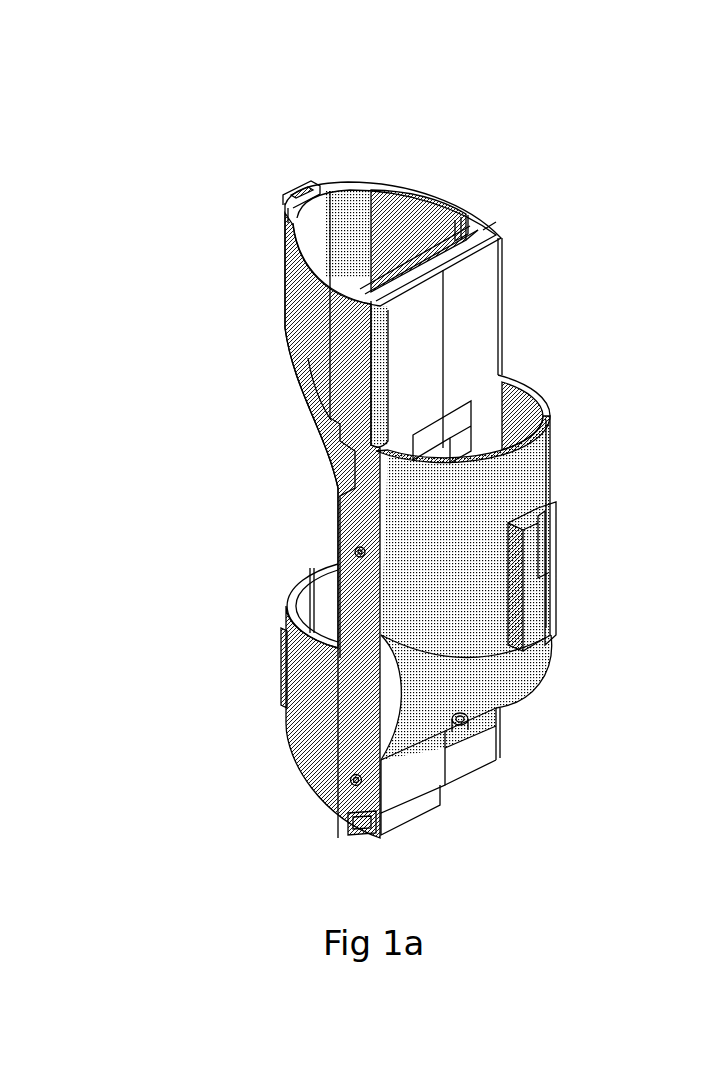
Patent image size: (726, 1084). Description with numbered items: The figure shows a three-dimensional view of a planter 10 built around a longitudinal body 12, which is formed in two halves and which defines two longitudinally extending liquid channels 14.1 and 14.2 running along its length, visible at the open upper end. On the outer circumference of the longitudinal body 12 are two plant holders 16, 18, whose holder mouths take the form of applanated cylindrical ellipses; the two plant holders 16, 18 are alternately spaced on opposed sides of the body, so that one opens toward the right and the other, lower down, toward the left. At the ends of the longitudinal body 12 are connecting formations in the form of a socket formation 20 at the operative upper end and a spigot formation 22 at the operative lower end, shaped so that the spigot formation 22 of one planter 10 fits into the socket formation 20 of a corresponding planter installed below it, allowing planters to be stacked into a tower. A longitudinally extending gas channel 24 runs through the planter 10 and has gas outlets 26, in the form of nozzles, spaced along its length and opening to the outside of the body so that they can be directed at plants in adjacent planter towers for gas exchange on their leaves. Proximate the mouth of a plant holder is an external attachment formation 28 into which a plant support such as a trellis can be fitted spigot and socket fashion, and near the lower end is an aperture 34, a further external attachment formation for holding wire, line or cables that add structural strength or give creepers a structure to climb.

The planter 10 is at (478, 98).
The longitudinal body 12 is at (463, 303).
The liquid channel 14.1 is at (350, 197).
The liquid channel 14.2 is at (440, 245).
The plant holder 16 is at (508, 402).
The plant holder 18 is at (297, 585).
The socket formation 20 is at (377, 170).
The spigot formation 22 is at (453, 782).
The gas channel 24 is at (365, 282).
The gas outlet 26 is at (345, 535).
The external attachment formation 28 is at (545, 510).
The aperture 34 is at (463, 721).